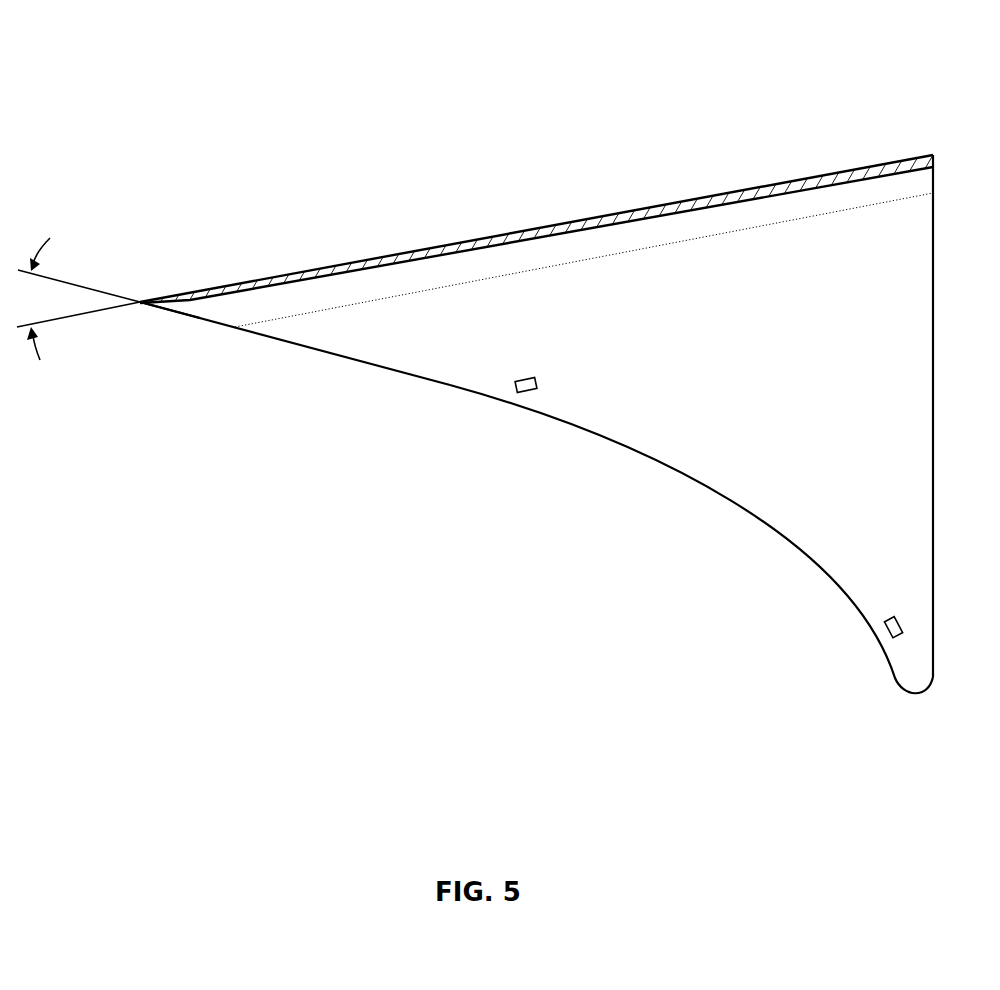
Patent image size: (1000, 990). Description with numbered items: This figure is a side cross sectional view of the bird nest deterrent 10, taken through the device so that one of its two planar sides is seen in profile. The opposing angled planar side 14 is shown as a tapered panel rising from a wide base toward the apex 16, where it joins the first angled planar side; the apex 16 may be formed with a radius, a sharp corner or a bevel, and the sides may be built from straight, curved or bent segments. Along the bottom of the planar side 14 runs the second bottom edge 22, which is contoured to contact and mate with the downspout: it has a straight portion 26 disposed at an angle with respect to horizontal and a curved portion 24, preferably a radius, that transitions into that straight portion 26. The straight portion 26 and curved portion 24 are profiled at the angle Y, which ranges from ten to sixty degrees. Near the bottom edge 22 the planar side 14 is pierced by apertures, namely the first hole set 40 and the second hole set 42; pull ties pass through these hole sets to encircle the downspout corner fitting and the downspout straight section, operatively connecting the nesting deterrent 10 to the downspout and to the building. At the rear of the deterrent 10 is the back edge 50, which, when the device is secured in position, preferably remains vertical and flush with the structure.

The nesting deterrent 10 is at (166, 82).
The opposing angled planar side 14 is at (537, 327).
The apex 16 is at (638, 207).
The second bottom edge 22 is at (462, 392).
The curved portion 24 is at (763, 508).
The straight portion 26 is at (260, 335).
The first hole set 40 is at (885, 627).
The second hole set 42 is at (528, 393).
The back edge 50 is at (933, 250).